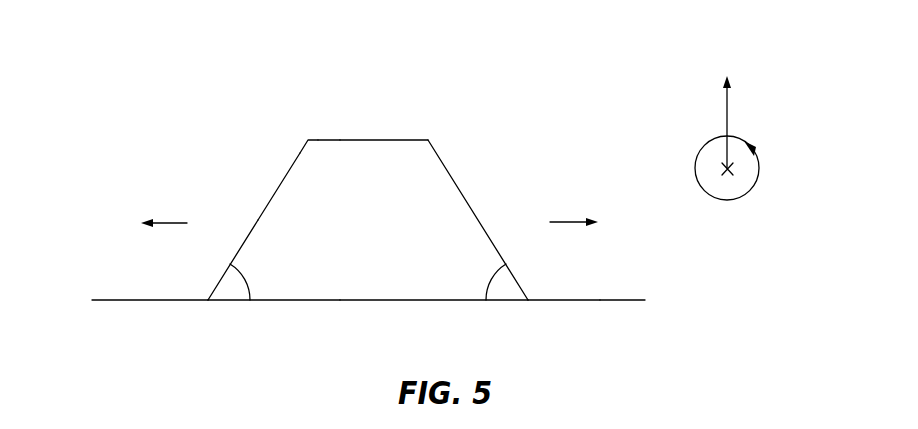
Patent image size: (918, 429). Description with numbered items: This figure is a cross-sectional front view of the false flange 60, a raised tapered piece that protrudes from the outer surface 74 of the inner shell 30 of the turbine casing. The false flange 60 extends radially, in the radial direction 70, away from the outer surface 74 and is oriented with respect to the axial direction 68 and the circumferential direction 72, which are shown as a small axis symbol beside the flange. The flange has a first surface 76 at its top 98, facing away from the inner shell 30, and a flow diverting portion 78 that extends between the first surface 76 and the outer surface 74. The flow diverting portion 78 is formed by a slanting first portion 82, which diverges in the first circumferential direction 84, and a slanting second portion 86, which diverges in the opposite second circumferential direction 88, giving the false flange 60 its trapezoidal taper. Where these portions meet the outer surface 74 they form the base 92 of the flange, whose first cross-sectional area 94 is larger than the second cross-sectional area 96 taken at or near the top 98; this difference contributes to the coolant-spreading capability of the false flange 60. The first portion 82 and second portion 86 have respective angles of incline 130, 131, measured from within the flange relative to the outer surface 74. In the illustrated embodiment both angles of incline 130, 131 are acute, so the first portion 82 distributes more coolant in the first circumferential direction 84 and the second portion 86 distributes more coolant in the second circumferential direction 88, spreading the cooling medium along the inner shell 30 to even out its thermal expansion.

The inner shell 30 is at (447, 53).
The false flange 60 is at (368, 195).
The axial direction 68 is at (722, 168).
The radial direction 70 is at (728, 113).
The circumferential direction 72 is at (759, 170).
The outer surface 74 is at (625, 300).
The first surface 76 is at (370, 138).
The flow diverting portion 78 is at (268, 207).
The first portion 82 is at (247, 238).
The first circumferential direction 84 is at (172, 222).
The second portion 86 is at (481, 219).
The second circumferential direction 88 is at (570, 222).
The base 92 is at (358, 302).
The first cross-sectional area 94 is at (317, 293).
The second cross-sectional area 96 is at (311, 153).
The top 98 is at (328, 148).
The angle of incline 130 is at (247, 278).
The angle of incline 131 is at (494, 278).